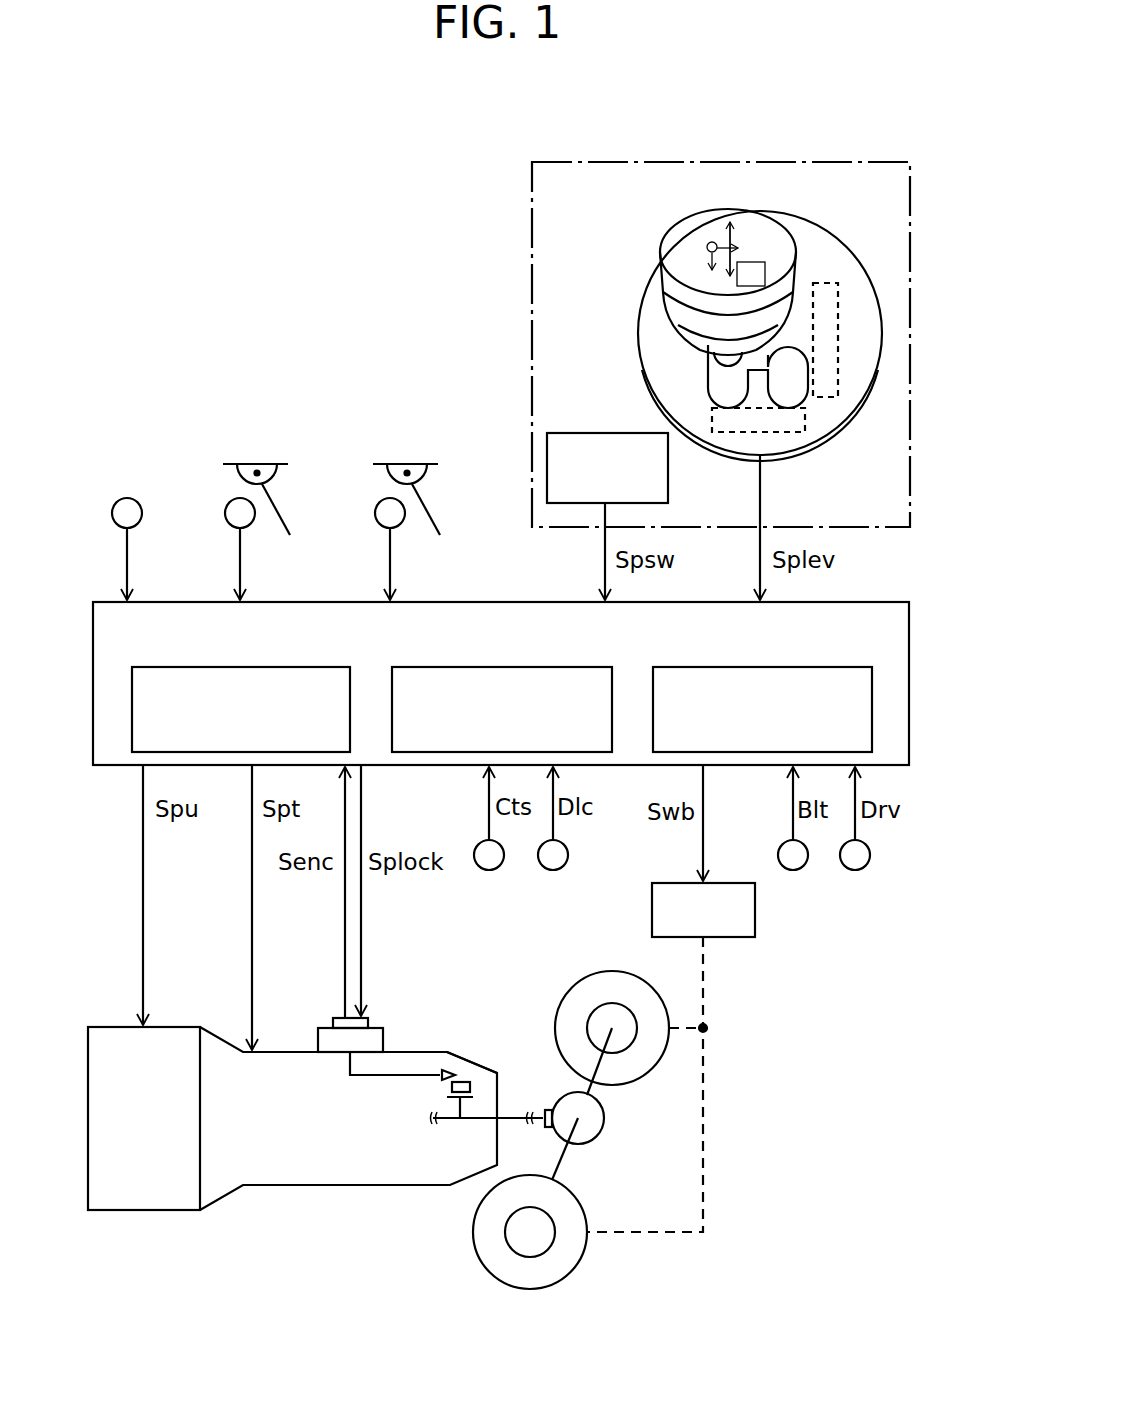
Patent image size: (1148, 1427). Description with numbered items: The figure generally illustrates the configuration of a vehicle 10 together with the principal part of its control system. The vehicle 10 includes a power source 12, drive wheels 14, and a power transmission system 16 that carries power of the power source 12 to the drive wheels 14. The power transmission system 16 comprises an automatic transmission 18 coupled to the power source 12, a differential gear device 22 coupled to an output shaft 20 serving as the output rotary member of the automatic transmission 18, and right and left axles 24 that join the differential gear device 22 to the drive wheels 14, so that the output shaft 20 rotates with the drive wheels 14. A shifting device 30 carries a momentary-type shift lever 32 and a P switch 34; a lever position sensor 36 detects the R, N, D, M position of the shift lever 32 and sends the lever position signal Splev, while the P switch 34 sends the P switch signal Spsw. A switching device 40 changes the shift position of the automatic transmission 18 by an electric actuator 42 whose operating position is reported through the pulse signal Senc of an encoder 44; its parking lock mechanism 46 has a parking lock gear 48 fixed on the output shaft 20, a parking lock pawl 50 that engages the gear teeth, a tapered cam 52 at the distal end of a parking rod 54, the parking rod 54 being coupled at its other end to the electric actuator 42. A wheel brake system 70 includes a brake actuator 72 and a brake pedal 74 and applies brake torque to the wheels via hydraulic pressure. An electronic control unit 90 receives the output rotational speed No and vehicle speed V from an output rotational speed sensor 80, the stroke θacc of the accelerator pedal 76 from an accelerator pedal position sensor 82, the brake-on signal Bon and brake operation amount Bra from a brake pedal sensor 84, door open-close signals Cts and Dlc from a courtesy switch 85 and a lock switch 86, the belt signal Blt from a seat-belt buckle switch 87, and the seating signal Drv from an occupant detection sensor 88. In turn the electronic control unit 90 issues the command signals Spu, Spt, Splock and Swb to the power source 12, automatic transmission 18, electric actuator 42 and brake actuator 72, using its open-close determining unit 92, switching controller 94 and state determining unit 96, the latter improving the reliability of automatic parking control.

The vehicle 10 is at (800, 120).
The power source 12 is at (125, 1197).
The drive wheels 14 is at (635, 998).
The power transmission system 16 is at (270, 1250).
The automatic transmission 18 is at (280, 1168).
The output shaft 20 is at (470, 1115).
The differential gear device 22 is at (590, 1124).
The right and left axles 24 is at (597, 1095).
The shifting device 30 is at (693, 160).
The shift lever 32 is at (718, 210).
The P switch 34 is at (567, 440).
The lever position sensor 36 is at (780, 427).
The switching device 40 is at (318, 1005).
The electric actuator 42 is at (377, 1028).
The encoder 44 is at (333, 1023).
The parking lock mechanism 46 is at (482, 1068).
The parking lock gear 48 is at (443, 1087).
The parking lock pawl 50 is at (464, 1082).
The cam 52 is at (448, 1068).
The parking rod 54 is at (375, 1078).
The wheel brake system 70 is at (664, 878).
The brake actuator 72 is at (720, 888).
The brake pedal 74 is at (430, 528).
The accelerator pedal 76 is at (280, 528).
The output rotational speed sensor 80 is at (131, 503).
The accelerator pedal position sensor 82 is at (234, 510).
The brake pedal sensor 84 is at (384, 510).
The courtesy switch 85 is at (492, 858).
The lock switch 86 is at (556, 858).
The seat-belt buckle switch 87 is at (796, 858).
The occupant detection sensor 88 is at (858, 858).
The electronic control unit 90 is at (838, 607).
The open-close determining unit 92 is at (287, 673).
The switching controller 94 is at (550, 673).
The state determining unit 96 is at (810, 673).